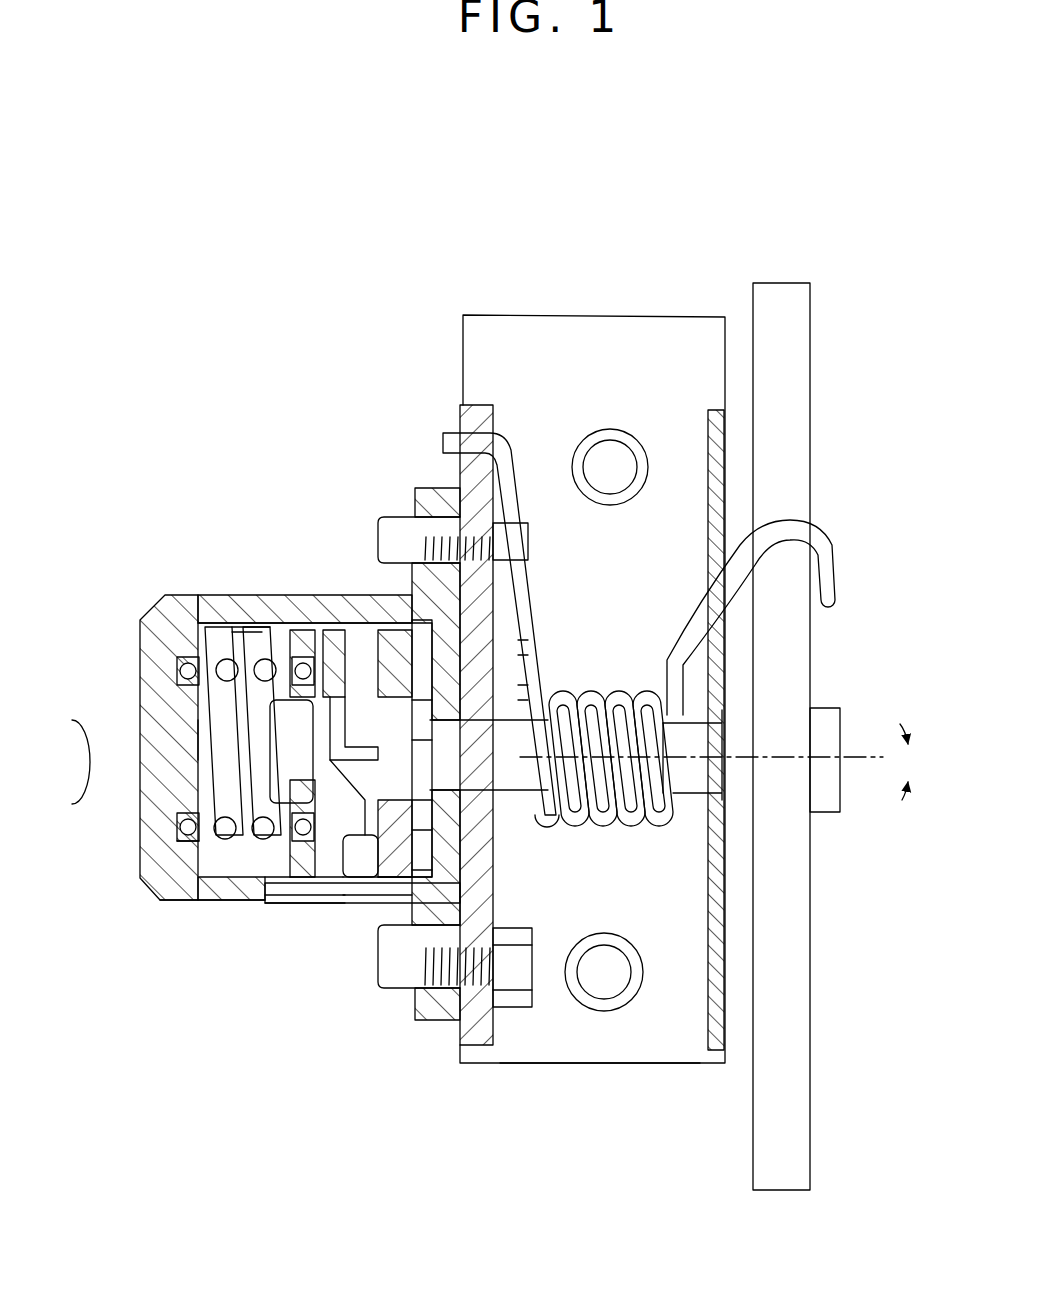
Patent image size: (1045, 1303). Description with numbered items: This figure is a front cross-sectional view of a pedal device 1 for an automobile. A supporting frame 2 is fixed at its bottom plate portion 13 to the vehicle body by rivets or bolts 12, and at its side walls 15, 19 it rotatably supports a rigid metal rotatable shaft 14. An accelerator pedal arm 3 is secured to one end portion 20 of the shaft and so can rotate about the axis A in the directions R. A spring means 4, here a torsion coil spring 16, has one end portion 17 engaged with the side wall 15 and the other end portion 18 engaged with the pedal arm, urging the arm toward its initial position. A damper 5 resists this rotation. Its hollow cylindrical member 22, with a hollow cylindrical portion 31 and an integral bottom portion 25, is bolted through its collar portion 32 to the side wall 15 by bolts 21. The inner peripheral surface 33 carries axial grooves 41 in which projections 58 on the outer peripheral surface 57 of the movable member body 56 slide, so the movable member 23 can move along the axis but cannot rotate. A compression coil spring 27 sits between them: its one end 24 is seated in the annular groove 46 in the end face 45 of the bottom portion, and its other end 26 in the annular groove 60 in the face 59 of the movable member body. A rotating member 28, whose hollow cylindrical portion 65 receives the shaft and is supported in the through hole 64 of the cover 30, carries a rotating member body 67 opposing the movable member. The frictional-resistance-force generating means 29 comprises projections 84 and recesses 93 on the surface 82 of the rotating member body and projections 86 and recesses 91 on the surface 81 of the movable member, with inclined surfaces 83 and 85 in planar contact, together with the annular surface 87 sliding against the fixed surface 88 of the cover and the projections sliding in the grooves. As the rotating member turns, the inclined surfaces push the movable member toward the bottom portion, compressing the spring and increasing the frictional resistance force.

The pedal device 1 is at (845, 435).
The supporting frame 2 is at (625, 312).
The accelerator pedal arm 3 is at (805, 1058).
The spring means 4 is at (590, 838).
The damper 5 is at (298, 995).
The rivets or bolts 12 is at (614, 464).
The bottom plate portion 13 is at (553, 1064).
The rotatable shaft 14 is at (690, 792).
The side wall 15 is at (470, 1050).
The torsion coil spring 16 is at (600, 702).
The one end portion 17 is at (455, 440).
The other end portion 18 is at (795, 536).
The side wall 19 is at (705, 1052).
The one end portion 20 is at (828, 722).
The bolts 21 is at (400, 530).
The hollow cylindrical member 22 is at (128, 706).
The movable member 23 is at (266, 640).
The one end 24 is at (180, 840).
The bottom portion 25 is at (170, 815).
The other end 26 is at (300, 655).
The compression coil spring 27 is at (212, 640).
The rotating member 28 is at (370, 642).
The frictional-resistance-force generating means 29 is at (363, 850).
The cover 30 is at (440, 688).
The hollow cylindrical portion 31 is at (278, 608).
The collar portion 32 is at (437, 500).
The inner peripheral surface 33 is at (190, 885).
The grooves 41 is at (280, 875).
The end face 45 is at (205, 738).
The annular groove 46 is at (175, 665).
The movable member body 56 is at (328, 640).
The outer peripheral surface 57 is at (310, 895).
The projections 58 is at (328, 883).
The face 59 is at (258, 637).
The annular groove 60 is at (262, 880).
The through hole 64 is at (440, 702).
The hollow cylindrical portion 65 is at (282, 778).
The rotating member body 67 is at (432, 655).
The surface 81 is at (352, 900).
The surface 82 is at (393, 870).
The inclined surfaces 83 is at (375, 835).
The projections 84 is at (548, 757).
The inclined surfaces 85 is at (415, 775).
The projections 86 is at (465, 833).
The annular surface 87 is at (420, 640).
The fixed surface 88 is at (462, 880).
The recesses 91 is at (420, 744).
The recesses 93 is at (470, 805).
The axis A is at (780, 765).
The directions R is at (890, 718).